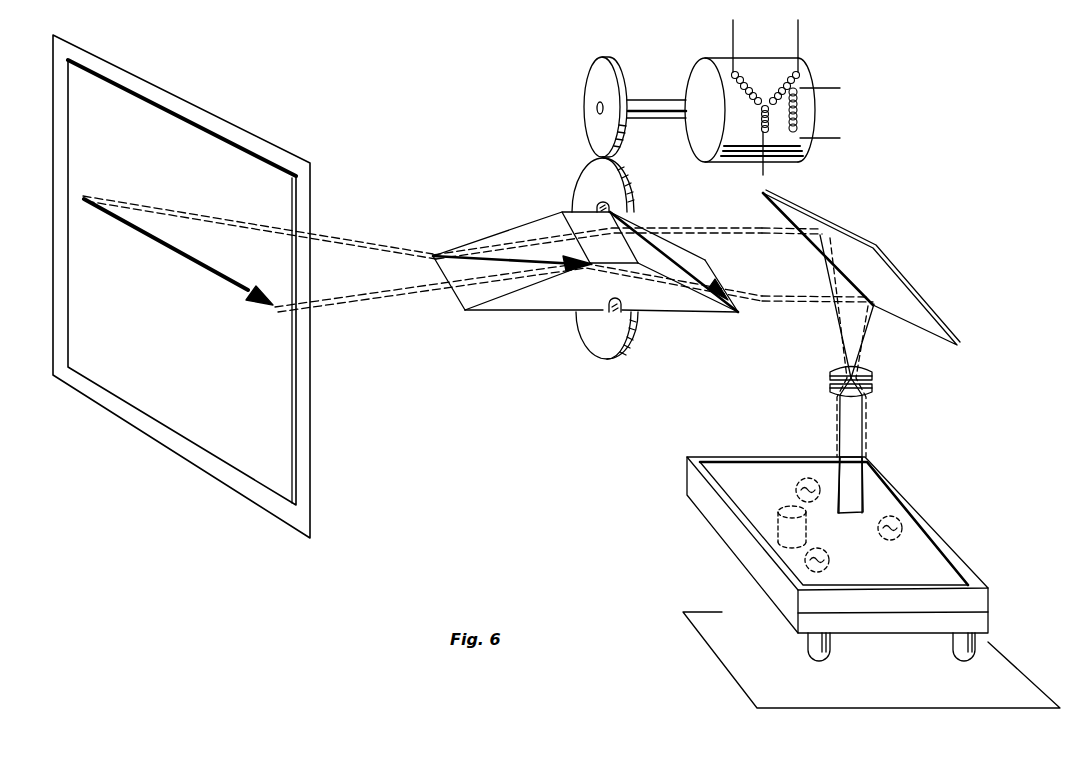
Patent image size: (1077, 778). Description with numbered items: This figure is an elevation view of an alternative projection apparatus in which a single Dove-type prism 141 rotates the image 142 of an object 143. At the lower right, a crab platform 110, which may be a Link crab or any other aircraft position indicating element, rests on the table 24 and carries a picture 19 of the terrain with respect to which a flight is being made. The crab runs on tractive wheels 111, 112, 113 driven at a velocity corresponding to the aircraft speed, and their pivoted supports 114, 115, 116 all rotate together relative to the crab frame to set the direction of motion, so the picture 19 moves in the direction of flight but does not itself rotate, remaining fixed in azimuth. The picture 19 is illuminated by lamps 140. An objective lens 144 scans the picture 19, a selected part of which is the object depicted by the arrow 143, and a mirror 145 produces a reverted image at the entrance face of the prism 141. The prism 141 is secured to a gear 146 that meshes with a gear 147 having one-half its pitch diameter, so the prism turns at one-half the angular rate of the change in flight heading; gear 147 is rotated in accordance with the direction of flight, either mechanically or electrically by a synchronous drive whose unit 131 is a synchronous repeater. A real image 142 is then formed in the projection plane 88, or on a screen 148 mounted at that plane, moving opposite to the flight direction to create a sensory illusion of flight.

The projection plane 88 is at (280, 146).
The screen 148 is at (75, 161).
The image 142 is at (202, 272).
The Dove prism 141 is at (463, 293).
The gear 146 is at (630, 192).
The gear 147 is at (625, 60).
The synchronous repeater 131 is at (800, 83).
The mirror 145 is at (905, 292).
The objective lens 144 is at (877, 364).
The object 143 is at (856, 509).
The picture 19 is at (912, 566).
The crab platform 110 is at (982, 633).
The lamps 140 is at (905, 514).
The tractive wheel 113 is at (822, 551).
The pivoted support 116 is at (781, 504).
The tractive wheel 111 is at (806, 655).
The pivoted support 114 is at (807, 648).
The tractive wheel 112 is at (958, 658).
The pivoted support 115 is at (958, 651).
The table 24 is at (757, 690).